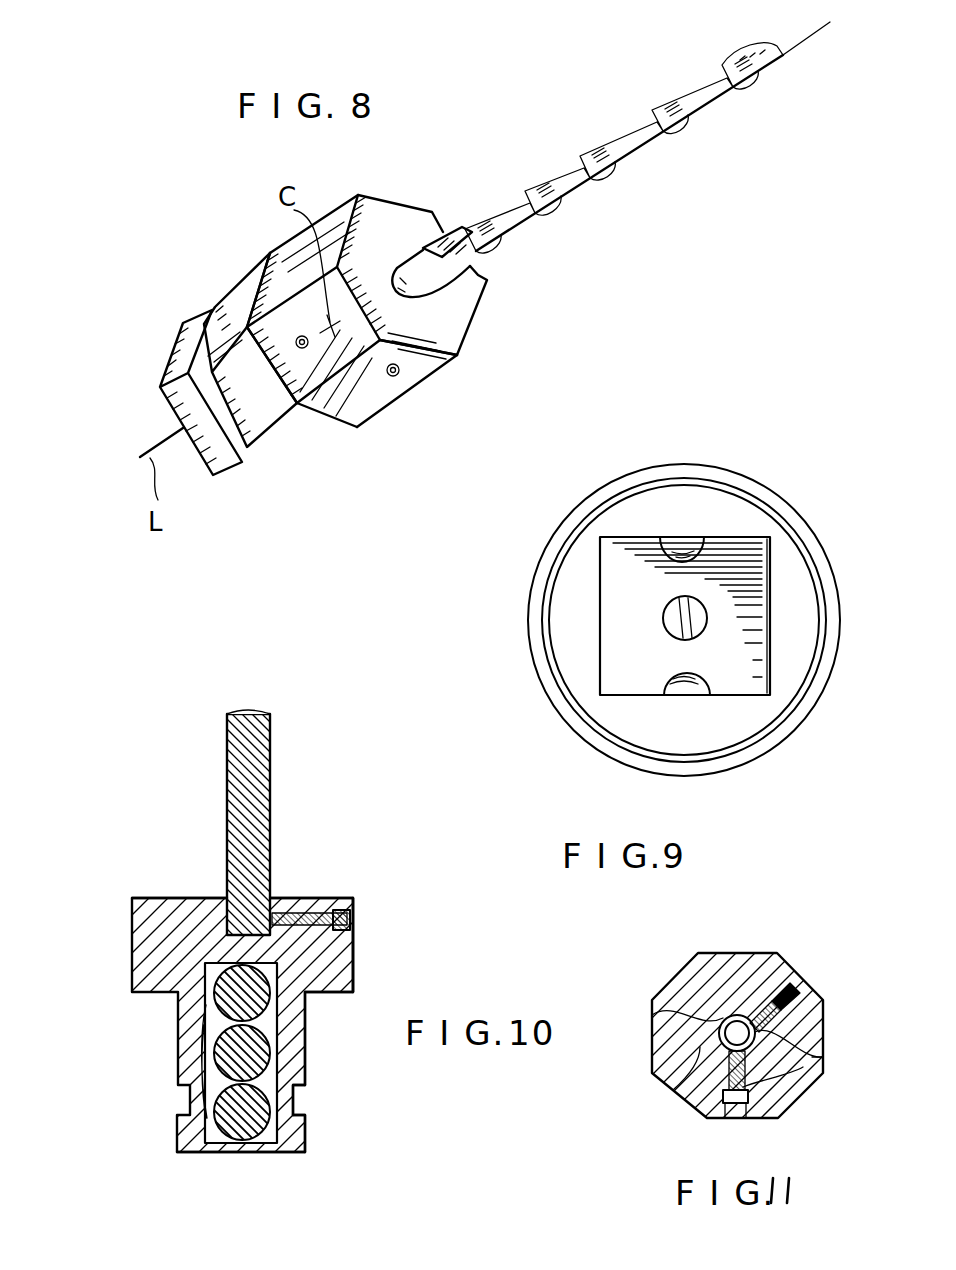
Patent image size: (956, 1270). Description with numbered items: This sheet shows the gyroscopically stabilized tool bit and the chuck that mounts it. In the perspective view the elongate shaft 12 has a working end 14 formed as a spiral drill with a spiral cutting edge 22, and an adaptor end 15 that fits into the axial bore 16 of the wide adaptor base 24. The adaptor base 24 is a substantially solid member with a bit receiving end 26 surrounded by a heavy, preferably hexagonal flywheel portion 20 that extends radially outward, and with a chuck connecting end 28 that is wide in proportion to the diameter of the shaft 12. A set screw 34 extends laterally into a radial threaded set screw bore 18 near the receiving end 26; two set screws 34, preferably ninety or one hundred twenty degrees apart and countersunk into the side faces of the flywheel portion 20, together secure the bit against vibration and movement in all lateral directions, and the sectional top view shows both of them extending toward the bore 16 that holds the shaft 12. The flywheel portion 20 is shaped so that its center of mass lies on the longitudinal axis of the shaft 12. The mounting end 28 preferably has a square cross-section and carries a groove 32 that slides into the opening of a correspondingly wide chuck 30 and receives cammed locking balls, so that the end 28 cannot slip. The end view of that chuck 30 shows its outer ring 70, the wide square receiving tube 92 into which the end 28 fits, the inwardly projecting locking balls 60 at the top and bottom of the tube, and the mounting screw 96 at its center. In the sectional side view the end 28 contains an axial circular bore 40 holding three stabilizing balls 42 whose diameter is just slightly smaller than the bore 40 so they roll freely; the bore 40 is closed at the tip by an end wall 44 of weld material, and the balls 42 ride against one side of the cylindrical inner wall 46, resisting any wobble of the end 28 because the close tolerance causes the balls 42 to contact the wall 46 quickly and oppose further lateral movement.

In FIG. 8, the elongate shaft 12 is at (600, 172).
In FIG. 10, the elongate shaft 12 is at (273, 768).
In FIG. 11, the elongate shaft 12 is at (675, 1090).
In FIG. 8, the working end 14 is at (770, 58).
In FIG. 8, the adaptor end 15 is at (405, 248).
In FIG. 10, the adaptor end 15 is at (205, 872).
In FIG. 10, the axial bore 16 is at (288, 902).
In FIG. 11, the axial bore 16 is at (652, 1020).
In FIG. 10, the set screw bore 18 is at (330, 895).
In FIG. 11, the set screw bore 18 is at (812, 1057).
In FIG. 8, the flywheel portion 20 is at (472, 275).
In FIG. 10, the flywheel portion 20 is at (351, 910).
In FIG. 11, the flywheel portion 20 is at (740, 953).
In FIG. 8, the drill cutting edge 22 is at (590, 157).
In FIG. 8, the adaptor base 24 is at (293, 430).
In FIG. 10, the adaptor base 24 is at (308, 1062).
In FIG. 8, the bit receiving end 26 is at (466, 360).
In FIG. 10, the bit receiving end 26 is at (356, 852).
In FIG. 8, the chuck connecting end 28 is at (220, 262).
In FIG. 10, the chuck connecting end 28 is at (92, 945).
In FIG. 9, the chuck 30 is at (784, 462).
In FIG. 8, the groove 32 is at (245, 452).
In FIG. 10, the groove 32 is at (300, 1100).
In FIG. 8, the set screw 34 is at (391, 378).
In FIG. 10, the set screw 34 is at (350, 935).
In FIG. 11, the set screw 34 is at (806, 992).
In FIG. 10, the axial circular bore 40 is at (267, 1028).
In FIG. 10, the stabilizing balls 42 is at (230, 998).
In FIG. 10, the end wall 44 is at (247, 1150).
In FIG. 10, the inner wall 46 is at (300, 961).
In FIG. 9, the notch 60 is at (720, 537).
In FIG. 9, the outer ring 70 is at (541, 556).
In FIG. 9, the plate 92 is at (610, 653).
In FIG. 9, the screw 96 is at (710, 608).